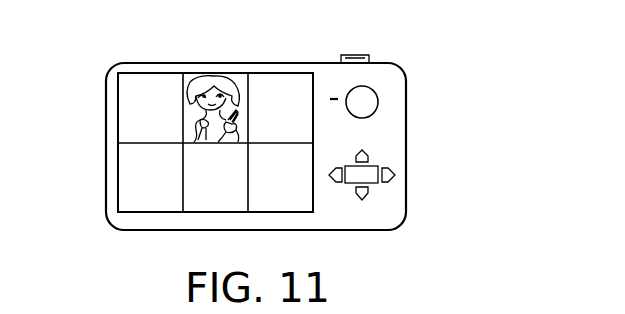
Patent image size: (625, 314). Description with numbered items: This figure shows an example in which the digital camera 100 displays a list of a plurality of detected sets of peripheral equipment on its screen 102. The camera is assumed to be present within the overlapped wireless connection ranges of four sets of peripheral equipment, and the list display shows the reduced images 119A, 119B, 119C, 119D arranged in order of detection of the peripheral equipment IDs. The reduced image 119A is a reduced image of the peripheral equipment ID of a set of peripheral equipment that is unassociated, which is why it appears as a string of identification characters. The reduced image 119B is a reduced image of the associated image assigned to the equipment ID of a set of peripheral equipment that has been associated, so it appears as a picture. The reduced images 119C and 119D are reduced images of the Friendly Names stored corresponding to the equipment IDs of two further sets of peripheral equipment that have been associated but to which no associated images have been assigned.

The digital camera 100 is at (406, 130).
The display unit 102 is at (118, 152).
The reduced image 119A is at (140, 73).
The reduced image 119B is at (216, 73).
The reduced image 119C is at (297, 73).
The reduced image 119D is at (135, 213).